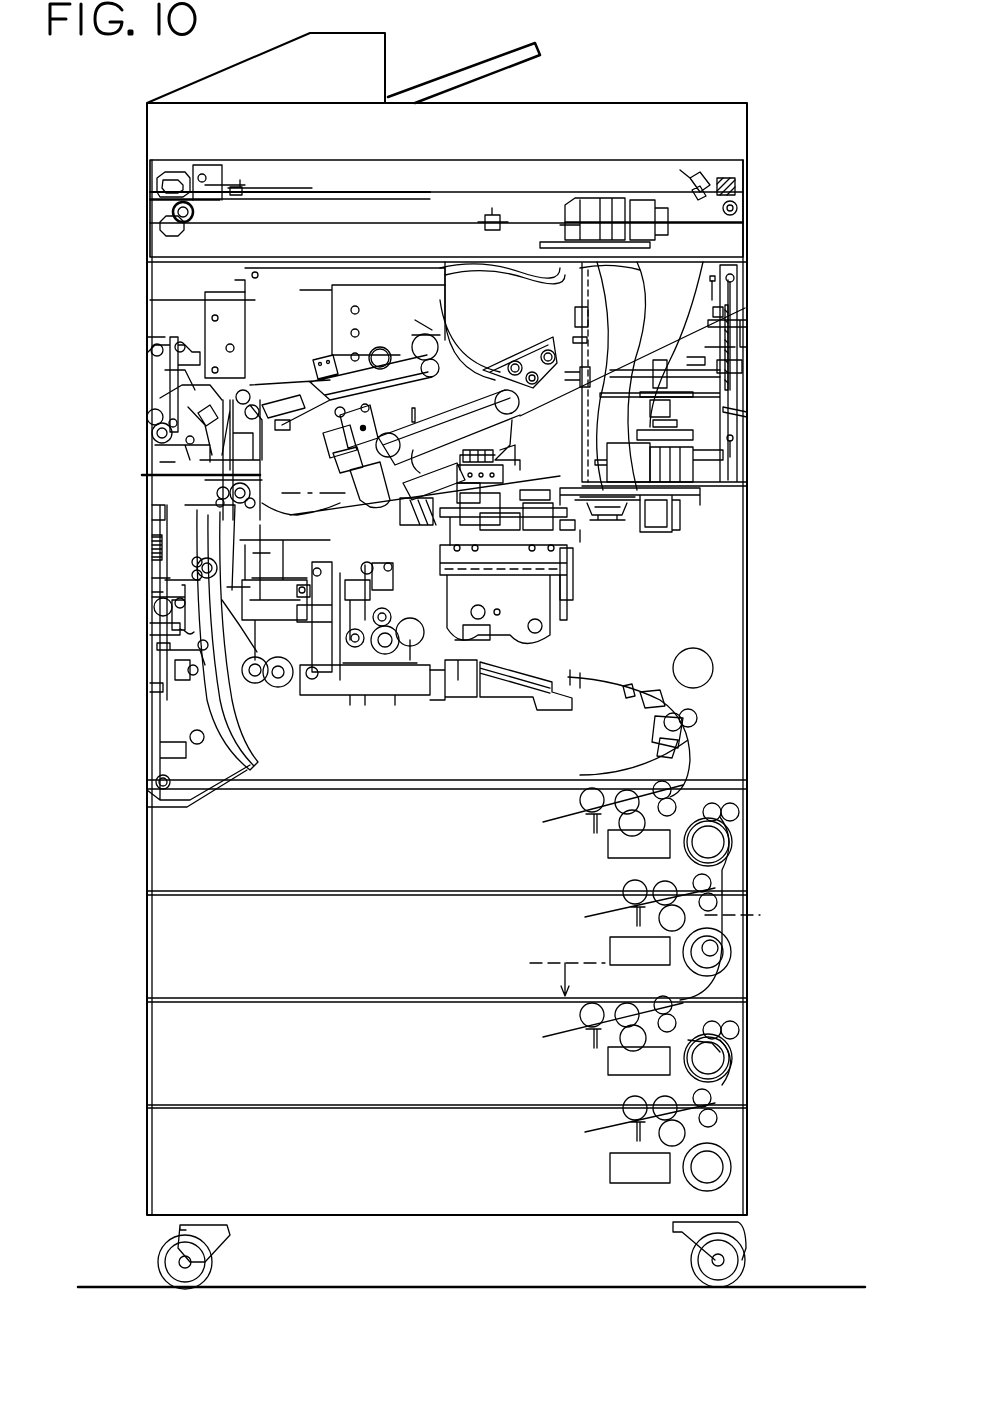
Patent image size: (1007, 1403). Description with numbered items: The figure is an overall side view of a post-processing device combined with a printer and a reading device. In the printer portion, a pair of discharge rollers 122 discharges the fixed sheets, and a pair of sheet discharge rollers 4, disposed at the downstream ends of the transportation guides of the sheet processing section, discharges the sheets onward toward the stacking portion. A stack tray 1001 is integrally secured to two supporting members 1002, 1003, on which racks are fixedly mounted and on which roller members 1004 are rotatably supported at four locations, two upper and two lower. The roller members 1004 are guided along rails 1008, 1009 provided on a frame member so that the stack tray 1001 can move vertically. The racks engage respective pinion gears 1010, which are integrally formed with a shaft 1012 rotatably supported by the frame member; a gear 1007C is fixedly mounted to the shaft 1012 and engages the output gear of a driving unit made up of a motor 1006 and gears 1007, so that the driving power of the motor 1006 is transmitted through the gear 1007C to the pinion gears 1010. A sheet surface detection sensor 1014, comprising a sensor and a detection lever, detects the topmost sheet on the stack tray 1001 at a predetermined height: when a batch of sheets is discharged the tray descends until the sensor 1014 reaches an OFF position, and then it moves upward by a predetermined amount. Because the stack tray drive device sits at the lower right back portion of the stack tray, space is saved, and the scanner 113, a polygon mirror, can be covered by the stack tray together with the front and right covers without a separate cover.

The pair of sheet discharge rollers 4 is at (421, 333).
The pair of discharge rollers 122 is at (167, 400).
The stack tray 1001 is at (712, 300).
The supporting member 1002 is at (548, 335).
The supporting member 1003 is at (735, 315).
The roller members 1004 is at (597, 262).
The motor 1006 is at (630, 470).
The gears of the driving unit 1007 is at (733, 457).
The gear 1007C is at (703, 262).
The rail 1008 is at (583, 300).
The rail 1009 is at (714, 280).
The pinion gears 1010 is at (557, 340).
The shaft 1012 is at (692, 363).
The sheet surface detection sensor 1014 is at (585, 505).
The scanner 113 is at (637, 537).